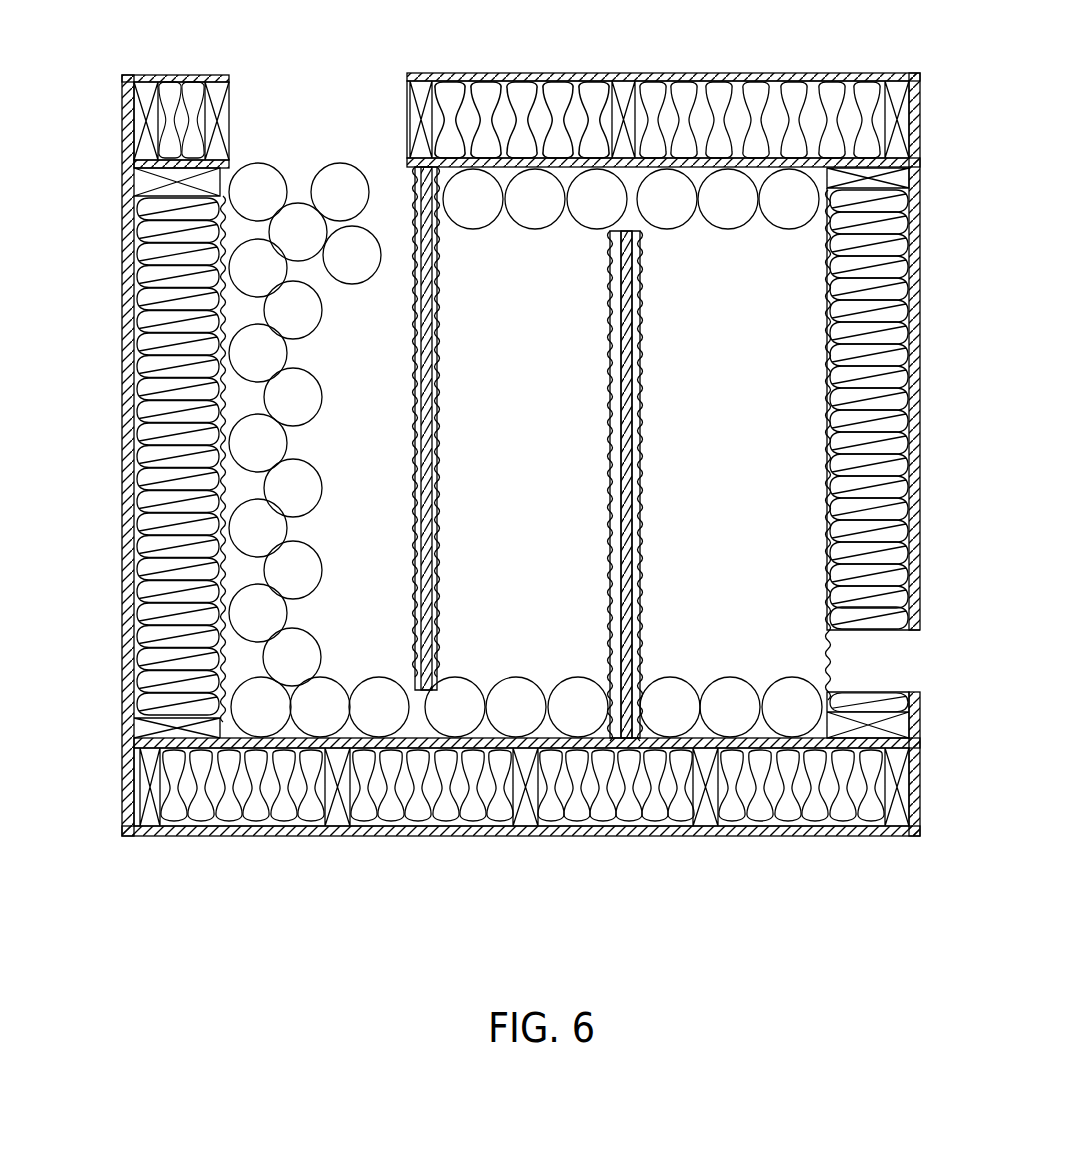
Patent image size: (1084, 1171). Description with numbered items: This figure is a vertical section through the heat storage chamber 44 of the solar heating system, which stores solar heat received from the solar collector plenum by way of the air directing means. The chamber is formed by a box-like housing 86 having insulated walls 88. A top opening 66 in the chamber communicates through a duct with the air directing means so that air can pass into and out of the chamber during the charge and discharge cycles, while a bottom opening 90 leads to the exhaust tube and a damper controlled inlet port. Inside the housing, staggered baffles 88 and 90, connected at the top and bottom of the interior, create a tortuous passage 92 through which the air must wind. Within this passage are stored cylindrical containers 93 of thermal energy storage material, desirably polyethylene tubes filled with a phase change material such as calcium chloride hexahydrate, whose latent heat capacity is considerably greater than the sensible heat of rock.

The top opening 66 is at (358, 72).
The heat storage chamber 44 is at (735, 72).
The box-like housing 86 is at (122, 293).
The insulated walls 88 is at (440, 318).
The bottom opening 90 is at (640, 348).
The tortuous passage 92 is at (580, 510).
The cylindrical containers 93 is at (322, 403).